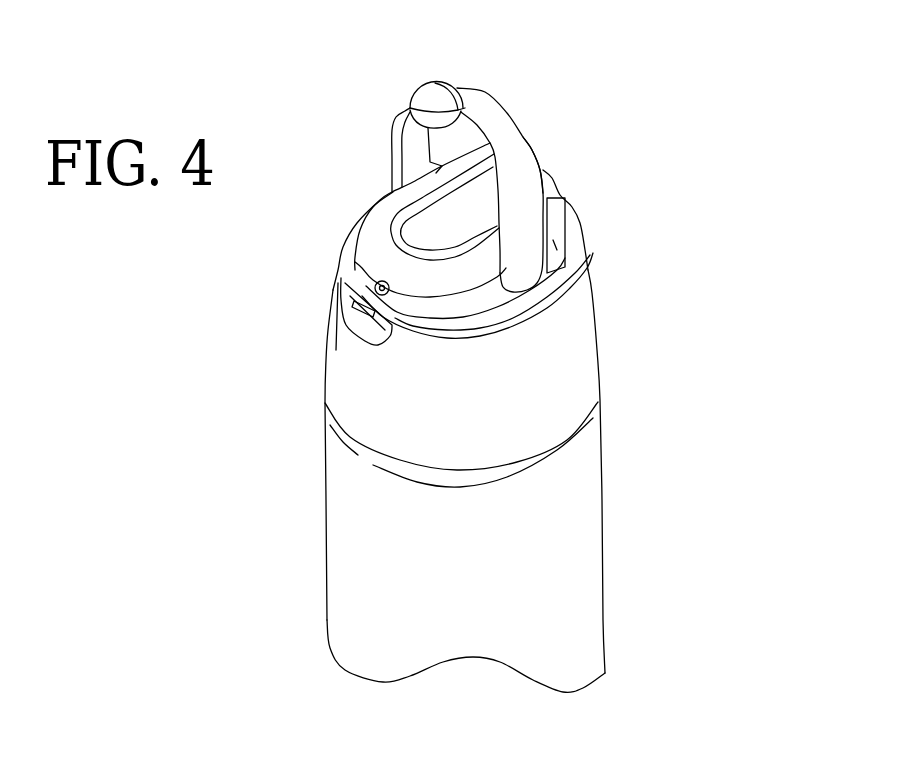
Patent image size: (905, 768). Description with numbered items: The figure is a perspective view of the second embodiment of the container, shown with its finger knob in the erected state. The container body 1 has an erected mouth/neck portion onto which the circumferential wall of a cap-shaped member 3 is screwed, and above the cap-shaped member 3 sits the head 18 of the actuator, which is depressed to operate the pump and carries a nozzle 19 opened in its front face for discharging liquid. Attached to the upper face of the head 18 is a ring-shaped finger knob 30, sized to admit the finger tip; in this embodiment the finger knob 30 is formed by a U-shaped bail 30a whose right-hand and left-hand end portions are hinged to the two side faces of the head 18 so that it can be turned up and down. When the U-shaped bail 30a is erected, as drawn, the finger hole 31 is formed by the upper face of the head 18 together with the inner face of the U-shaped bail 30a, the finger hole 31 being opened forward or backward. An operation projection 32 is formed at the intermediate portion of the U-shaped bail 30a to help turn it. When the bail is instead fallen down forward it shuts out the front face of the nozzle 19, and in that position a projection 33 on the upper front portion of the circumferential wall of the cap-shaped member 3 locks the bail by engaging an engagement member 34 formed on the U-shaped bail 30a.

The container body 1 is at (305, 565).
The cap-shaped member 3 is at (325, 380).
The head 18 is at (377, 224).
The nozzle 19 is at (370, 270).
The finger knob 30 is at (537, 117).
The U-shaped bail 30a is at (527, 160).
The finger hole 31 is at (413, 153).
The operation projection 32 is at (440, 80).
The projection 33 is at (352, 312).
The engagement member 34 is at (423, 112).